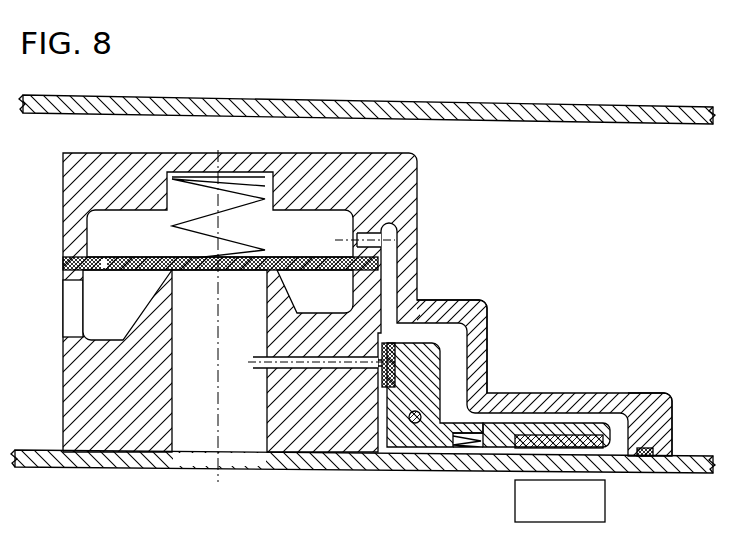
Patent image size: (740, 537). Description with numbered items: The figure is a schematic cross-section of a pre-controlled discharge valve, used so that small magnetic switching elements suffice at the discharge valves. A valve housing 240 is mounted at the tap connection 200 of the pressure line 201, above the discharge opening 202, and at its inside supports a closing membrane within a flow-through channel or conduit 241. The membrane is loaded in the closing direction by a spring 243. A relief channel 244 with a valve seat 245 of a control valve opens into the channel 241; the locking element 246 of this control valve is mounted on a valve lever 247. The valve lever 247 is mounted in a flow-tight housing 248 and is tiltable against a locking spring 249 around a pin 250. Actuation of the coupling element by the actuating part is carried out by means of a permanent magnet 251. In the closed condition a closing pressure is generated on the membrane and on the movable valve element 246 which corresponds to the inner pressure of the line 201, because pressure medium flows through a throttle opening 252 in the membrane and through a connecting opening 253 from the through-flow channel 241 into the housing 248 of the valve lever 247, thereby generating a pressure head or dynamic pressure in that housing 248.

The tap connection 200 is at (470, 180).
The pressure line 201 is at (630, 108).
The discharge opening 202 is at (248, 462).
The valve housing 240 is at (342, 182).
The flow through channel 241 is at (328, 248).
The spring 243 is at (240, 193).
The relief channel 244 is at (290, 365).
The valve seat 245 is at (433, 307).
The locking element 246 is at (392, 352).
The valve lever 247 is at (503, 428).
The flow-tight housing 248 is at (617, 405).
The locking spring 249 is at (466, 449).
The pin 250 is at (414, 423).
The permanent magnet 251 is at (598, 514).
The throttle opening 252 is at (104, 282).
The connecting opening 253 is at (357, 240).